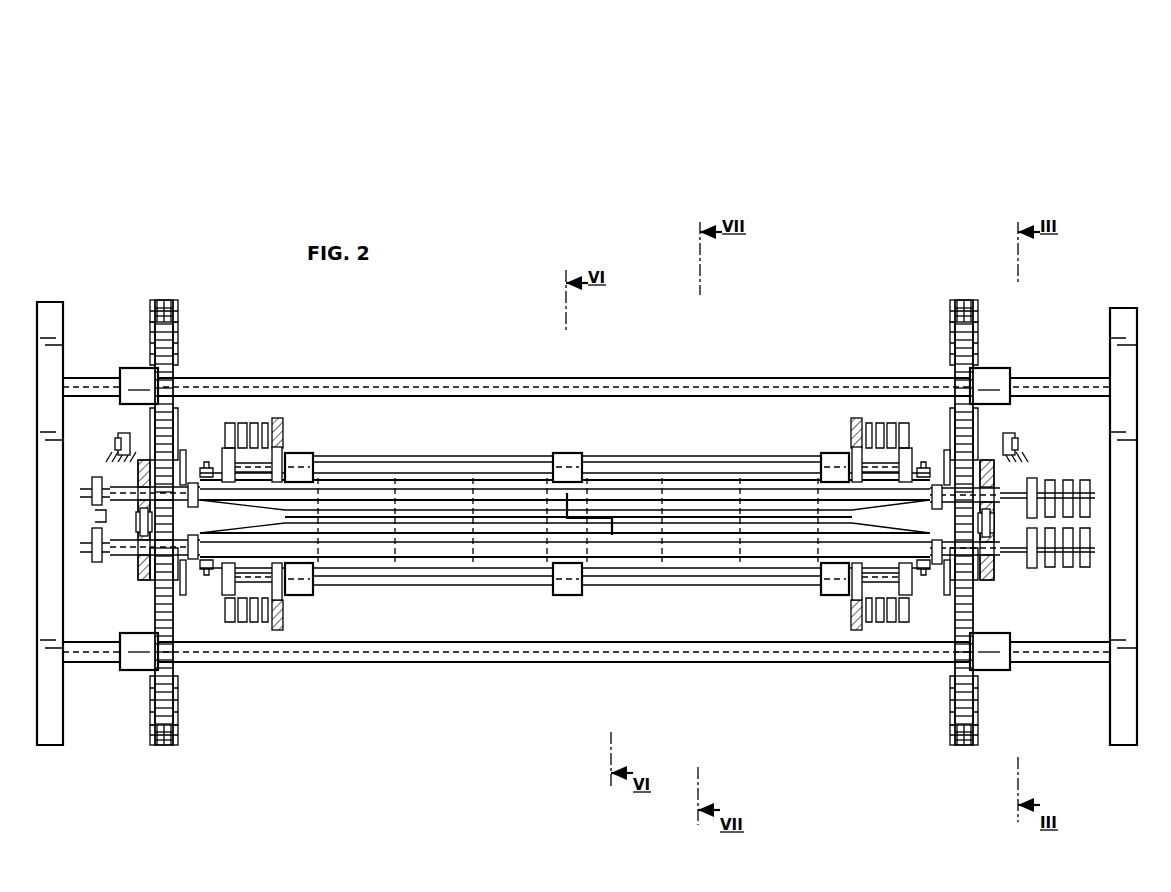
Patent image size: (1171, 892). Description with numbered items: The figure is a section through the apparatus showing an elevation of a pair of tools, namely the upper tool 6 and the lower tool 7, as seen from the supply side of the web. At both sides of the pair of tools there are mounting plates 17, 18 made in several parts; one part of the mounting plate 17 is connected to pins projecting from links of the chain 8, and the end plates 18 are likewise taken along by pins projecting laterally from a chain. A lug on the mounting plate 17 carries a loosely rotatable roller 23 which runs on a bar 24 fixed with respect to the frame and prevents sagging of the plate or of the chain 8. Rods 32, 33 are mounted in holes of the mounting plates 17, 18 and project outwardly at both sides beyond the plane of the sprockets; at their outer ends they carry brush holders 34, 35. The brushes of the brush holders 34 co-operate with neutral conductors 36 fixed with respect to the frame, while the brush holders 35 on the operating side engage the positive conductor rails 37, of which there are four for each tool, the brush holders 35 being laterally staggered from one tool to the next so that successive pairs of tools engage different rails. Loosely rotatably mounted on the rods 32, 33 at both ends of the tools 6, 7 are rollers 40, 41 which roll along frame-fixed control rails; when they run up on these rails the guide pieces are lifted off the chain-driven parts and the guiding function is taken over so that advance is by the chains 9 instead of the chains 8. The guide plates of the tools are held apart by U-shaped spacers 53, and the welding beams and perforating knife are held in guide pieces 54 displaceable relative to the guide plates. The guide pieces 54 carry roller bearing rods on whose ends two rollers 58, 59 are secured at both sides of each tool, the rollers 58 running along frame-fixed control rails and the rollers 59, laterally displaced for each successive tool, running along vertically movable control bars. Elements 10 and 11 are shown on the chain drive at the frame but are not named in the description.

The upper tool 6 is at (749, 328).
The lower tool 7 is at (664, 686).
The chain 8 is at (178, 308).
The chain 9 is at (178, 740).
The upper gear wheel 10 is at (180, 334).
The lower gear wheel 11 is at (178, 703).
The mounting plate 17 is at (994, 525).
The mounting plate 18 is at (146, 578).
The roller 23 is at (121, 438).
The bar 24 is at (574, 486).
The rod 32 is at (450, 490).
The rod 33 is at (459, 550).
The brush holder 34 is at (94, 478).
The brush holder 35 is at (1034, 478).
The neutral conductor 36 is at (95, 520).
The positive conductor rail 37 is at (1090, 540).
The roller 40 is at (192, 482).
The roller 41 is at (183, 450).
The spacer 53 is at (321, 480).
The guide piece 54 is at (308, 453).
The roller 58 is at (283, 448).
The roller 59 is at (228, 450).